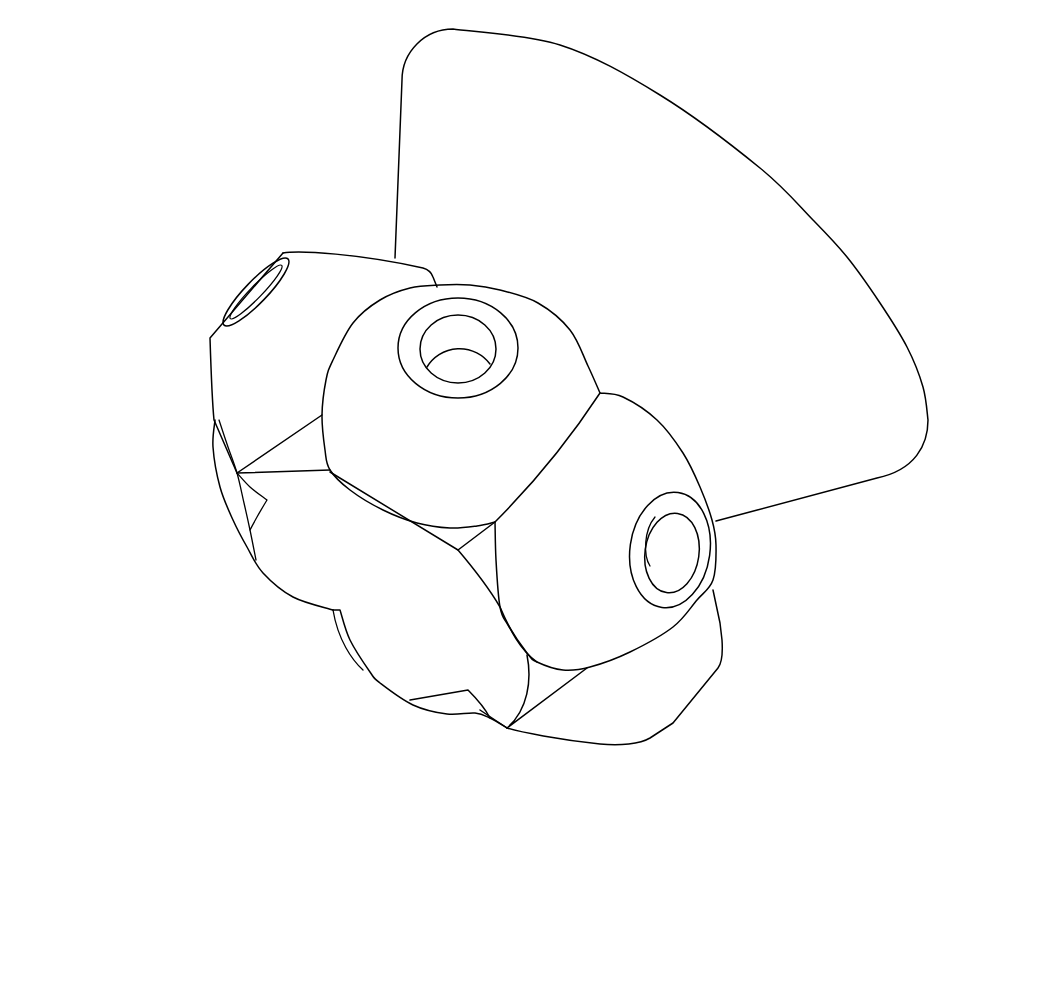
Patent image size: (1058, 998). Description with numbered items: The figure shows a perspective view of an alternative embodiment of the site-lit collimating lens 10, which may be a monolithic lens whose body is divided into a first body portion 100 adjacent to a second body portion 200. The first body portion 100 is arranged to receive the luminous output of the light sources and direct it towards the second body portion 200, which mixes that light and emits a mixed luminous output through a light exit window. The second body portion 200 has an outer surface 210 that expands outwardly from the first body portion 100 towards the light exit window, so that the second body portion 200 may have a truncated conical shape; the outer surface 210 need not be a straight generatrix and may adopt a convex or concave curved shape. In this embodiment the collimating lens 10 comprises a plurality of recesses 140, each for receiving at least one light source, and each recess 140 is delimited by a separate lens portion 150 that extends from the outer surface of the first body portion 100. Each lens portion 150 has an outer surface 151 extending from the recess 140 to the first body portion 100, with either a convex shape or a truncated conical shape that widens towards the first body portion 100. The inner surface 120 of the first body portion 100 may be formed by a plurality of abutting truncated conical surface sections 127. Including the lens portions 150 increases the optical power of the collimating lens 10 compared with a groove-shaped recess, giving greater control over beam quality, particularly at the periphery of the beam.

The collimating lens 10 is at (530, 897).
The first body portion 100 is at (163, 205).
The inner surface 120 is at (315, 568).
The conical surface sections 127 is at (400, 667).
The recess 140 is at (462, 362).
The lens portion 150 is at (337, 256).
The outer surface of the lens portion 151 is at (555, 374).
The second body portion 200 is at (836, 110).
The outer surface 210 is at (805, 455).